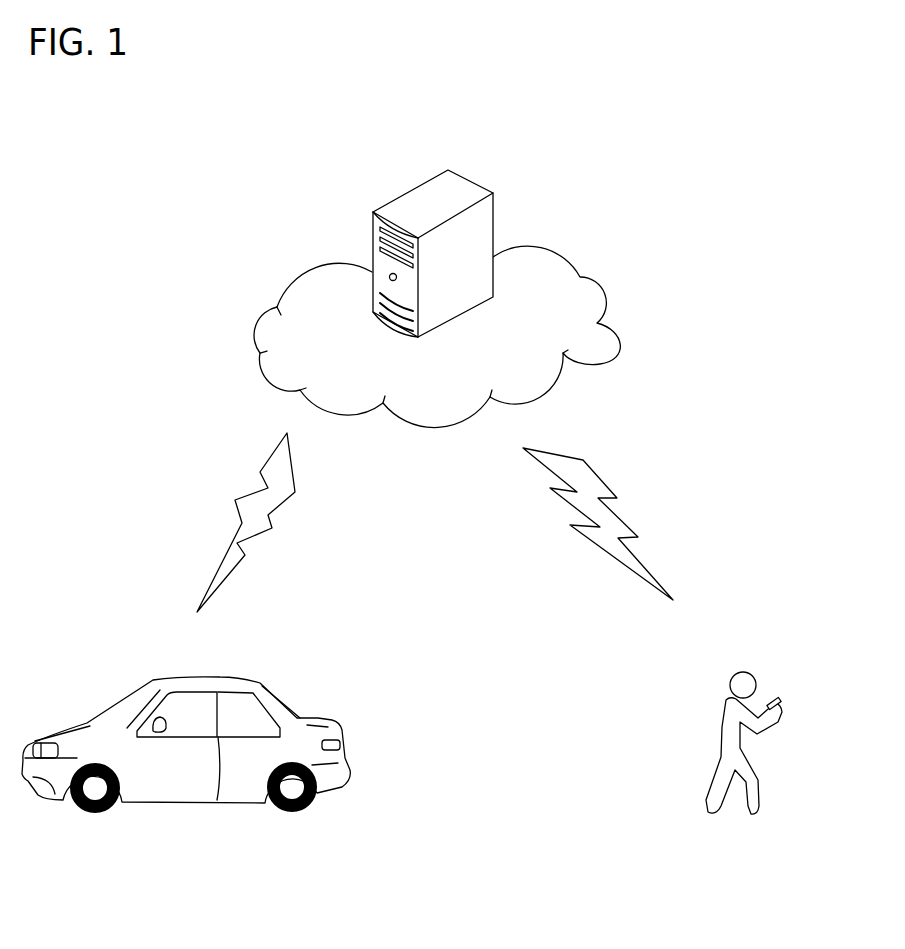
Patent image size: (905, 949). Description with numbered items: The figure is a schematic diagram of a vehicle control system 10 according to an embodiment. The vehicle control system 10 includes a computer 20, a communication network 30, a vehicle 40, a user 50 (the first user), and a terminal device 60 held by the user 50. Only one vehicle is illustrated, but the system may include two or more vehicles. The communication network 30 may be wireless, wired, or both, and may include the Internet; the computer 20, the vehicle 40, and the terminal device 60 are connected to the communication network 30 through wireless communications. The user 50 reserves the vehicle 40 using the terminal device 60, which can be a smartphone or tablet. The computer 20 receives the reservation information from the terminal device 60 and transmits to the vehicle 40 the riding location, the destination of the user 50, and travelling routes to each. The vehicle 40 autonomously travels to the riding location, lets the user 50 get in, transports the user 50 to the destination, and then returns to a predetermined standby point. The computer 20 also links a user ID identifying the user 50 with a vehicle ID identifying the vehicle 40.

The vehicle control system 10 is at (681, 266).
The computer 20 is at (418, 200).
The communication network 30 is at (567, 258).
The vehicle 40 is at (128, 700).
The user 50 is at (724, 737).
The terminal device 60 is at (779, 700).